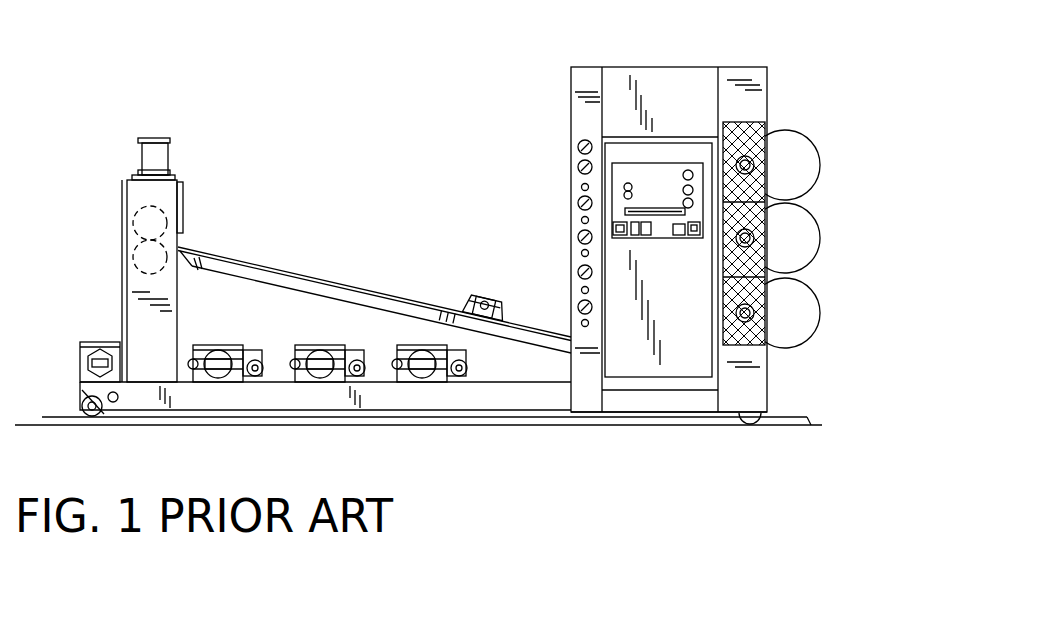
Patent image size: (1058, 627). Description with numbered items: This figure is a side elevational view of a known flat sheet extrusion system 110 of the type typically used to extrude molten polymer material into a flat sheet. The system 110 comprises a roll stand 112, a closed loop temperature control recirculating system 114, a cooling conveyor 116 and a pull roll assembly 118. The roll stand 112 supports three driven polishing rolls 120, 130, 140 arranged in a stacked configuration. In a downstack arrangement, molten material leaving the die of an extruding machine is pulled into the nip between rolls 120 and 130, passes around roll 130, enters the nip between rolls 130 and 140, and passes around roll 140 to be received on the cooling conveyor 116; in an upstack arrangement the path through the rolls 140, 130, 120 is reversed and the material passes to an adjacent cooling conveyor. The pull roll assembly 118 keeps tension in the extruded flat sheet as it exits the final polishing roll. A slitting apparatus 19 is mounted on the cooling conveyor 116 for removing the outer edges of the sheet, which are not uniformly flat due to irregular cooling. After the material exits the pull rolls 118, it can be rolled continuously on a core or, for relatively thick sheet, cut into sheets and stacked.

The flat sheet extrusion system 110 is at (692, 446).
The roll stand 112 is at (793, 77).
The closed loop temperature control recirculating system 114 is at (659, 145).
The cooling conveyor 116 is at (322, 277).
The pull roll assembly 118 is at (206, 172).
The carriage block 19 is at (496, 276).
The polishing roll 120 is at (782, 163).
The polishing roll 130 is at (782, 239).
The polishing roll 140 is at (782, 314).